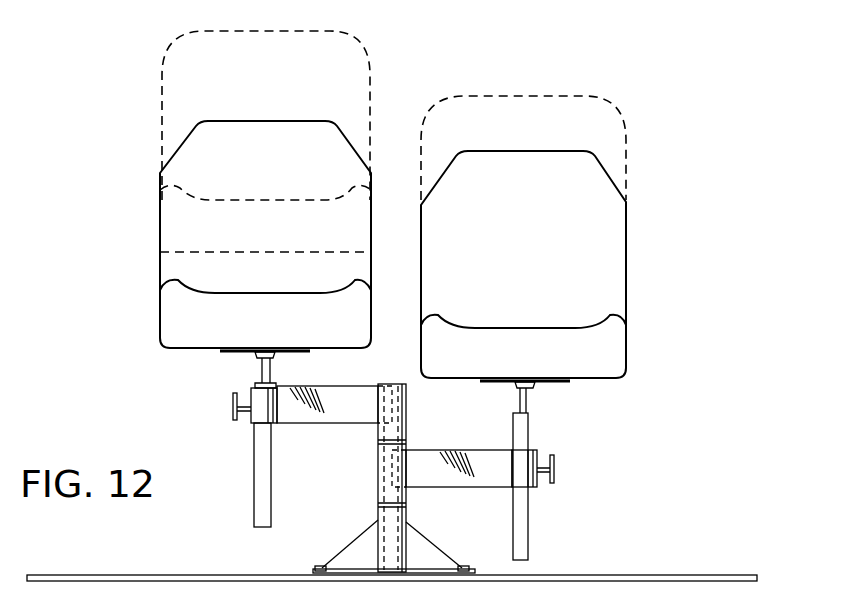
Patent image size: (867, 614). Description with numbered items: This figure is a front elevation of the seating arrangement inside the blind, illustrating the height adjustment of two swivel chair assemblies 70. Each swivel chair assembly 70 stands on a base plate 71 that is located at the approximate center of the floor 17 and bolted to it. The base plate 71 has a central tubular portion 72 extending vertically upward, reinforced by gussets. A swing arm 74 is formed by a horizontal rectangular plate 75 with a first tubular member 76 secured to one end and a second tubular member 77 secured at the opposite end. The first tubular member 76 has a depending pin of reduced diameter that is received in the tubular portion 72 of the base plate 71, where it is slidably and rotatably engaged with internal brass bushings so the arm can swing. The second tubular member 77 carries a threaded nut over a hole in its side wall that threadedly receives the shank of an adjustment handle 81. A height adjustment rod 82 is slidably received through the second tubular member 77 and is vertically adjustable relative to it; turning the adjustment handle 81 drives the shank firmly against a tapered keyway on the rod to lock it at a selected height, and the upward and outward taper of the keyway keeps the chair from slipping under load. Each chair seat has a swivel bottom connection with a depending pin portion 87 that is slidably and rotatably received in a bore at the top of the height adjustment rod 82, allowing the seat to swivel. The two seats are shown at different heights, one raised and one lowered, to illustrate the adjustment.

The floor 17 is at (678, 575).
The swivel chair assembly 70 is at (152, 215).
The base plate 71 is at (430, 568).
The central tubular portion 72 is at (372, 534).
The swing arm 74 is at (328, 432).
The horizontal rectangular plate 75 is at (338, 372).
The first tubular member 76 is at (407, 416).
The second tubular member 77 is at (257, 425).
The adjustment handle 81 is at (233, 414).
The height adjustment rod 82 is at (254, 516).
The depending pin portion 87 is at (261, 364).